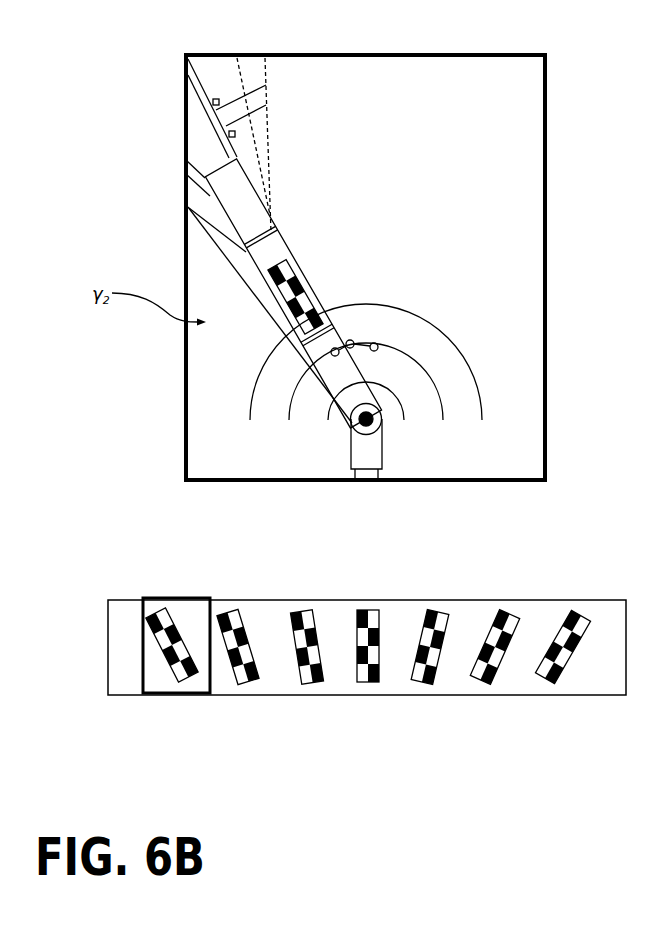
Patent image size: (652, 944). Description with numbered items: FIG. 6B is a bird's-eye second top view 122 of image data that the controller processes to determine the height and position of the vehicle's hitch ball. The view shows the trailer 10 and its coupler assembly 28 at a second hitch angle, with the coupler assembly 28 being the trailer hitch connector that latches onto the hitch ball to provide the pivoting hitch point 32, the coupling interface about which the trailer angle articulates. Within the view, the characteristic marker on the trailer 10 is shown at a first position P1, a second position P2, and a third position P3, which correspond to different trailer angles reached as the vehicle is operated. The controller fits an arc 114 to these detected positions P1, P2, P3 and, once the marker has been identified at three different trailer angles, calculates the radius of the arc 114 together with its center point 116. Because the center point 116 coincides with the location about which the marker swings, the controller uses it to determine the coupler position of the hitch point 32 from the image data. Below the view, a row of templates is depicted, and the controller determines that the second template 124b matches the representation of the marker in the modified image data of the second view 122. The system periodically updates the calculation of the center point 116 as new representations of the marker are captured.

The second top view 122 is at (514, 82).
The trailer 10 is at (253, 216).
The coupler assembly 28 is at (352, 238).
The arc 114 is at (427, 373).
The hitch point 32 is at (278, 468).
The center point 116 is at (360, 427).
The first position P1 is at (378, 345).
The second position P2 is at (353, 340).
The third position P3 is at (331, 353).
The second template 124b is at (180, 672).